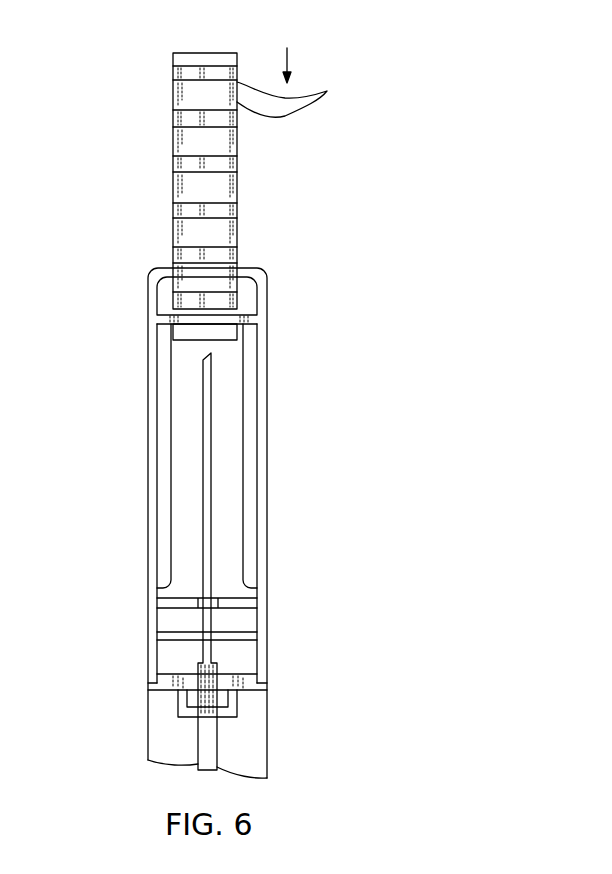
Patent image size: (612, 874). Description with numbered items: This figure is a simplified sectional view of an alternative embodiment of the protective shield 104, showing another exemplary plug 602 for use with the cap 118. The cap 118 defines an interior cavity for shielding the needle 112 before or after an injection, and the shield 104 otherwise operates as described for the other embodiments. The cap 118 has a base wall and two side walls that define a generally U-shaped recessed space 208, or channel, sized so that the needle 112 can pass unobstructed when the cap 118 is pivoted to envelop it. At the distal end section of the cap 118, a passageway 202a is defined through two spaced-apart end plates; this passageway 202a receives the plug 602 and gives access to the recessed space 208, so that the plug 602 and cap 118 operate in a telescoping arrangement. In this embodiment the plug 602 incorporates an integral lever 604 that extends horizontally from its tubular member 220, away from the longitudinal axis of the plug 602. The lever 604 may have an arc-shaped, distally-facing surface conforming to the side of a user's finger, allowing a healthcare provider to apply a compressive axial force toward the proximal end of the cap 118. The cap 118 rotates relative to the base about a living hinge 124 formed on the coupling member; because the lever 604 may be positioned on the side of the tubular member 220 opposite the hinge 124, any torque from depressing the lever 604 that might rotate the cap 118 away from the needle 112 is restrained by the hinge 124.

The plug 602 is at (150, 134).
The tubular member 220 is at (173, 192).
The lever 604 is at (317, 107).
The shield 104 is at (330, 423).
The passageway 202a is at (280, 267).
The recessed space 208 is at (230, 488).
The cap 118 is at (267, 592).
The needle 112 is at (203, 532).
The living hinge 124 is at (267, 730).